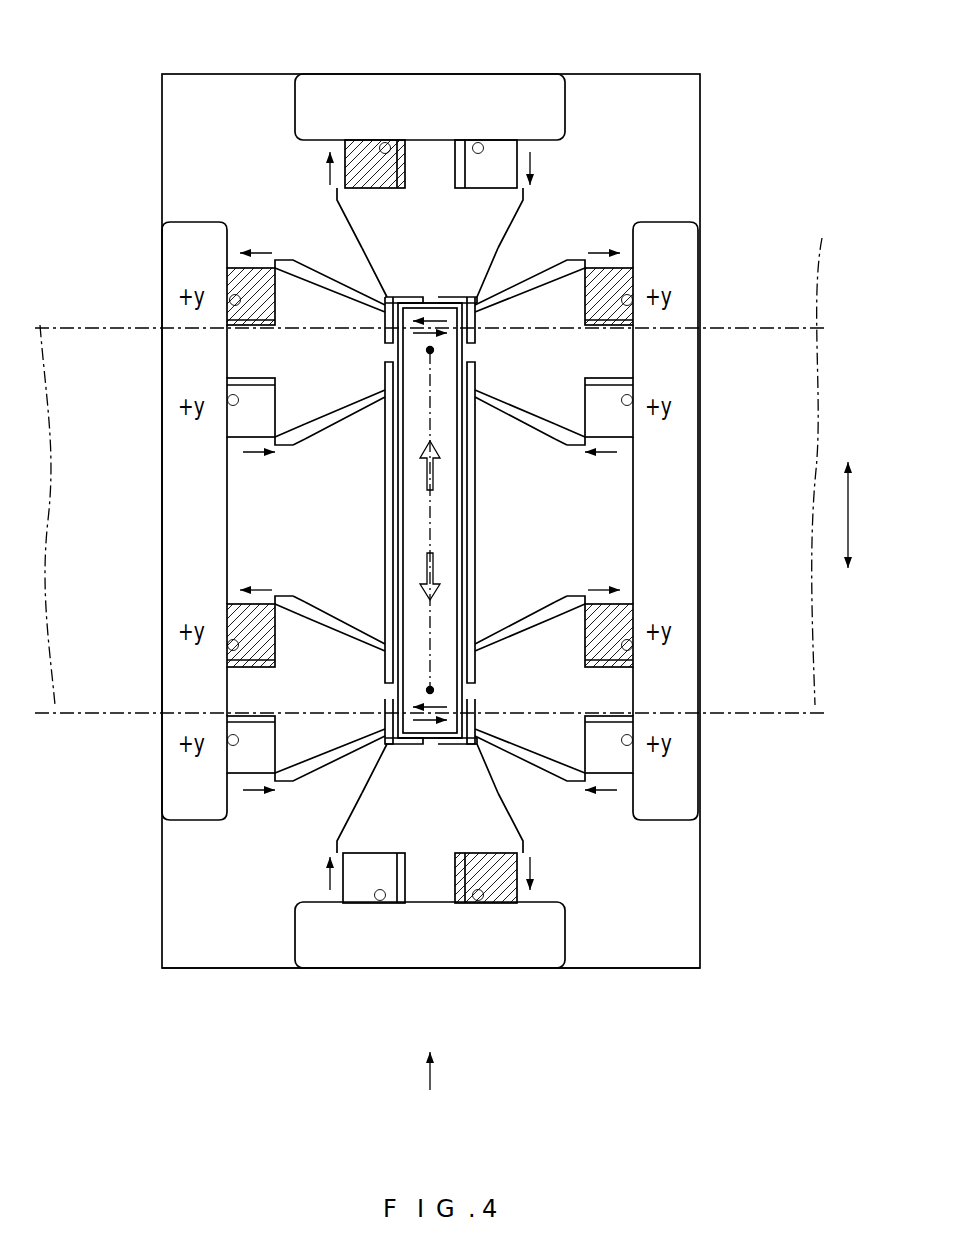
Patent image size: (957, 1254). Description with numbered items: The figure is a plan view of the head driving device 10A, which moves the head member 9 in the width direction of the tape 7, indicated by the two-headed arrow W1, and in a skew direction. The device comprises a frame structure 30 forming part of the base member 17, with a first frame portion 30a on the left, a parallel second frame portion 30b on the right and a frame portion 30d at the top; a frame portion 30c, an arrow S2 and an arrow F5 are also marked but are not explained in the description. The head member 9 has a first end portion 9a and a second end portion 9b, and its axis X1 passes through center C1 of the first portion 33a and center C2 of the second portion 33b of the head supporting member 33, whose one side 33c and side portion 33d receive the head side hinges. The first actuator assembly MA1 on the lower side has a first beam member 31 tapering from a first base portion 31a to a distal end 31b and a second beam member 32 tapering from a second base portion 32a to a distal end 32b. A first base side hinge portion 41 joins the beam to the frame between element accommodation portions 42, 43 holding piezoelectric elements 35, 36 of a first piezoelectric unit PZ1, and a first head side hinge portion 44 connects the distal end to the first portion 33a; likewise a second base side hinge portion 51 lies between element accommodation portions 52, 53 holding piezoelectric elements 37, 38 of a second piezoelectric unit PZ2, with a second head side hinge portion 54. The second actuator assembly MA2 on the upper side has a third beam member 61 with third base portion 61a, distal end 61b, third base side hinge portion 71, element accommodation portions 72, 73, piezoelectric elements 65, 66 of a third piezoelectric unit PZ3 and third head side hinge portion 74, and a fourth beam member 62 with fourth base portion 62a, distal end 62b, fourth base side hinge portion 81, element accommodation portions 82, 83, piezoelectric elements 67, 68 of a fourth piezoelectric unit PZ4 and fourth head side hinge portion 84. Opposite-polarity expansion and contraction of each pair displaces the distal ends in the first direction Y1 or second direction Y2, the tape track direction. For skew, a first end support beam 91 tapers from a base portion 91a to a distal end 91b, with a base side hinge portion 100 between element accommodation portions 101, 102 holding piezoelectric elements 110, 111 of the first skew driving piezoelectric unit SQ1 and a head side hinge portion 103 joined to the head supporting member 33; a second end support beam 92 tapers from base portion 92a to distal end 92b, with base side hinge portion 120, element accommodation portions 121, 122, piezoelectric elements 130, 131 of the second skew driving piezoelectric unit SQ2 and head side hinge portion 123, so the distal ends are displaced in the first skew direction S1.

The head driving device 10A is at (494, 503).
The tape 7 is at (819, 242).
The base member 17 is at (191, 970).
The frame structure 30 is at (428, 525).
The first frame portion 30a is at (163, 521).
The second frame portion 30b is at (698, 521).
The lower frame portion 30c is at (556, 952).
The frame portion 30d is at (545, 86).
The piezoelectric element 65 is at (225, 262).
The piezoelectric element 66 is at (240, 440).
The piezoelectric element 36 is at (240, 780).
The piezoelectric element 67 is at (635, 262).
The piezoelectric element 68 is at (620, 440).
The piezoelectric element 38 is at (620, 780).
The third base side hinge portion 71 is at (240, 350).
The element accommodation portion 72 is at (232, 303).
The element accommodation portion 73 is at (233, 403).
The fourth base side hinge portion 81 is at (620, 350).
The element accommodation portion 82 is at (628, 303).
The element accommodation portion 83 is at (627, 403).
The first base side hinge portion 41 is at (240, 688).
The element accommodation portion 42 is at (233, 648).
The element accommodation portion 43 is at (233, 743).
The second base side hinge portion 51 is at (620, 688).
The element accommodation portion 52 is at (627, 648).
The element accommodation portion 53 is at (627, 743).
The piezoelectric element 35 is at (240, 604).
The piezoelectric element 37 is at (620, 604).
The base side hinge portion 120 is at (422, 104).
The element accommodation portion 121 is at (388, 150).
The element accommodation portion 122 is at (468, 150).
The piezoelectric element 130 is at (345, 178).
The piezoelectric element 131 is at (518, 150).
The head side hinge portion 123 is at (430, 299).
The base side hinge portion 100 is at (424, 942).
The element accommodation portion 101 is at (472, 892).
The element accommodation portion 102 is at (390, 900).
The piezoelectric element 110 is at (515, 882).
The piezoelectric element 111 is at (345, 882).
The head side hinge portion 103 is at (430, 745).
The second end support beam 92 is at (393, 245).
The base portion 92a is at (345, 194).
The distal end 92b is at (383, 286).
The first end support beam 91 is at (393, 802).
The base portion 91a is at (338, 850).
The distal end 91b is at (385, 753).
The head member 9 is at (429, 523).
The first end portion 9a is at (480, 757).
The second end portion 9b is at (450, 302).
The head supporting member 33 is at (442, 519).
The first portion 33a is at (486, 624).
The second portion 33b is at (480, 311).
The one side 33c is at (386, 476).
The side portion 33d is at (478, 506).
The third head side hinge portion 74 is at (386, 323).
The fourth head side hinge portion 84 is at (477, 336).
The first head side hinge portion 44 is at (352, 690).
The second head side hinge portion 54 is at (472, 696).
The third beam member 61 is at (326, 455).
The third base portion 61a is at (290, 447).
The distal end 61b is at (330, 416).
The fourth beam member 62 is at (541, 448).
The fourth base portion 62a is at (575, 447).
The distal end 62b is at (516, 426).
The first beam member 31 is at (325, 688).
The first base portion 31a is at (290, 599).
The distal end 31b is at (380, 665).
The second beam member 32 is at (538, 686).
The second base portion 32a is at (578, 600).
The distal end 32b is at (493, 672).
The first skew driving piezoelectric unit SQ1 is at (262, 922).
The second skew driving piezoelectric unit SQ2 is at (270, 122).
The first piezoelectric unit PZ1 is at (234, 866).
The second piezoelectric unit PZ2 is at (616, 866).
The third piezoelectric unit PZ3 is at (233, 174).
The fourth piezoelectric unit PZ4 is at (616, 174).
The first actuator assembly MA1 is at (726, 890).
The second actuator assembly MA2 is at (724, 163).
The first skew direction S1 is at (410, 321).
The second strain direction S2 is at (450, 333).
The center C1 is at (430, 688).
The center C2 is at (430, 353).
The axis X1 is at (440, 499).
The first direction Y1 is at (440, 471).
The second direction Y2 is at (440, 571).
The width direction of the tape W1 is at (868, 515).
The viewing direction F5 is at (428, 1090).